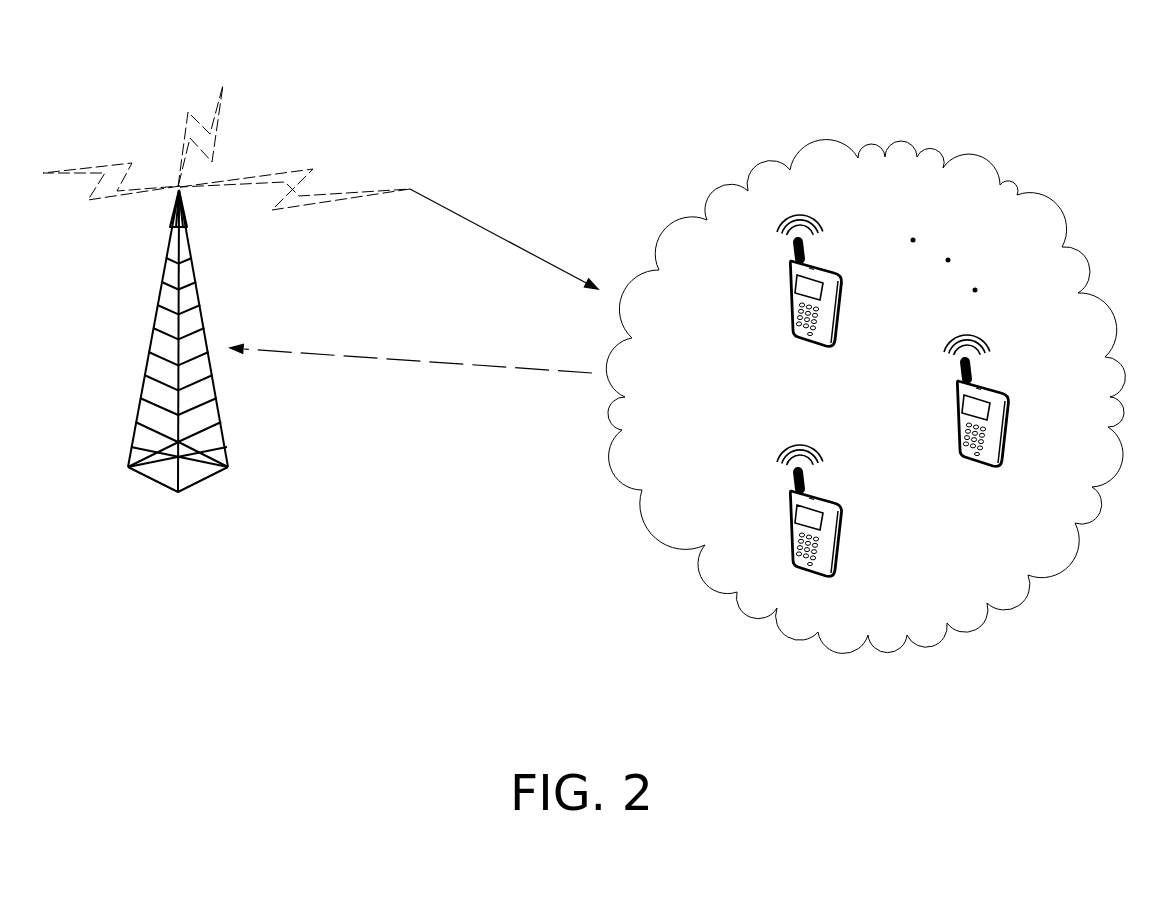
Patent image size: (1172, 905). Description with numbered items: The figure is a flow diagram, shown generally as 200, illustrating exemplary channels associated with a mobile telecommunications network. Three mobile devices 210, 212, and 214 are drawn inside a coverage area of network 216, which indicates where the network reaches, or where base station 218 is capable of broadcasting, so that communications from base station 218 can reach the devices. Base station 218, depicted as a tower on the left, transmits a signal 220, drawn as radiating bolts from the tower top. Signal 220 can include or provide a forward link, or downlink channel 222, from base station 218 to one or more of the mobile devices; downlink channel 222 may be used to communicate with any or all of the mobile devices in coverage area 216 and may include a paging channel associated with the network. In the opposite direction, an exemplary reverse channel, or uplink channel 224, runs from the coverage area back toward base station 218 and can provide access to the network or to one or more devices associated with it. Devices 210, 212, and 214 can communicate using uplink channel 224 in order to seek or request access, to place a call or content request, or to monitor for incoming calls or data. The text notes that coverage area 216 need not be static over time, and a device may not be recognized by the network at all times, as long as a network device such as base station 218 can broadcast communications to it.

The mobile telecommunications network channels diagram 200 is at (1064, 70).
The mobile device 210 is at (820, 260).
The mobile device 212 is at (987, 380).
The mobile device 214 is at (820, 490).
The coverage area of network 216 is at (930, 155).
The base station 218 is at (158, 304).
The signal 220 is at (170, 133).
The downlink channel 222 is at (458, 215).
The uplink channel 224 is at (335, 355).